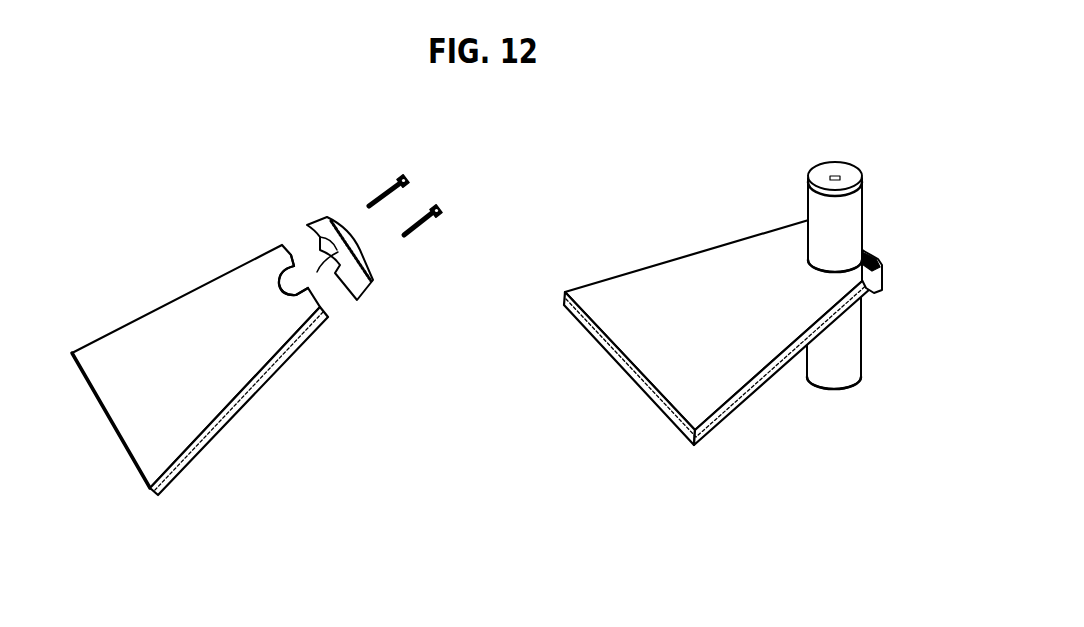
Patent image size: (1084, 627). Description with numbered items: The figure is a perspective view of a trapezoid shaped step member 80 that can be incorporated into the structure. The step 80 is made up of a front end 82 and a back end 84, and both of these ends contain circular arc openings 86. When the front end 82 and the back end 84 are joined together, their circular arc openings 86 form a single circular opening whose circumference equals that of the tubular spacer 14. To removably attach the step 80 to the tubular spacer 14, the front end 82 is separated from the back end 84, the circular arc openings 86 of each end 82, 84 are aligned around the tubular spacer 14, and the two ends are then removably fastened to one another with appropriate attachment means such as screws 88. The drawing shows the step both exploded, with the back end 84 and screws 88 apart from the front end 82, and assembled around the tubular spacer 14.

The tubular spacer 14 is at (827, 213).
The step member 80 is at (475, 304).
The front end 82 is at (222, 330).
The back end 84 is at (367, 290).
The circular arc openings 86 is at (320, 272).
The screws 88 is at (377, 193).